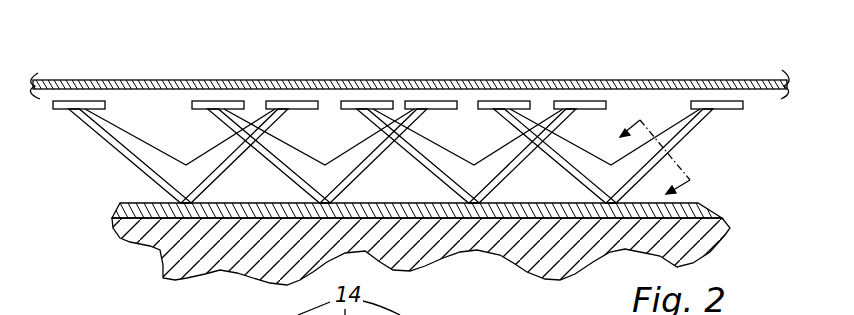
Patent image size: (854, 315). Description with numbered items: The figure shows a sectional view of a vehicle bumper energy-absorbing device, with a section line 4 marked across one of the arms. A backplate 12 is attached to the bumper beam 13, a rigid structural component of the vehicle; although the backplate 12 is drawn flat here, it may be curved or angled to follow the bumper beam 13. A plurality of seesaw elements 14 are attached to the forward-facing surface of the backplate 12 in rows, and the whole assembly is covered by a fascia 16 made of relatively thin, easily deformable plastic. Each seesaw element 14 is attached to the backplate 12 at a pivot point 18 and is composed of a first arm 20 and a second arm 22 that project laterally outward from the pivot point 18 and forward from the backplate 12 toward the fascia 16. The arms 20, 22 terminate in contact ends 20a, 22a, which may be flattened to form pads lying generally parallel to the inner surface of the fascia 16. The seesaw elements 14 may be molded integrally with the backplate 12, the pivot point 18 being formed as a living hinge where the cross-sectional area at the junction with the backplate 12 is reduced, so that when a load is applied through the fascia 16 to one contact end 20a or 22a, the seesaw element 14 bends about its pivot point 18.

The section line 4- 4 is at (665, 143).
The backplate 12 is at (143, 206).
The bumper beam 13 is at (700, 228).
The seesaw element 14 is at (418, 110).
The fascia 16 is at (622, 80).
The pivot point 18 is at (190, 200).
The first arm 20 is at (264, 125).
The contact end 20a is at (290, 100).
The second arm 22 is at (120, 129).
The contact end 22a is at (78, 102).